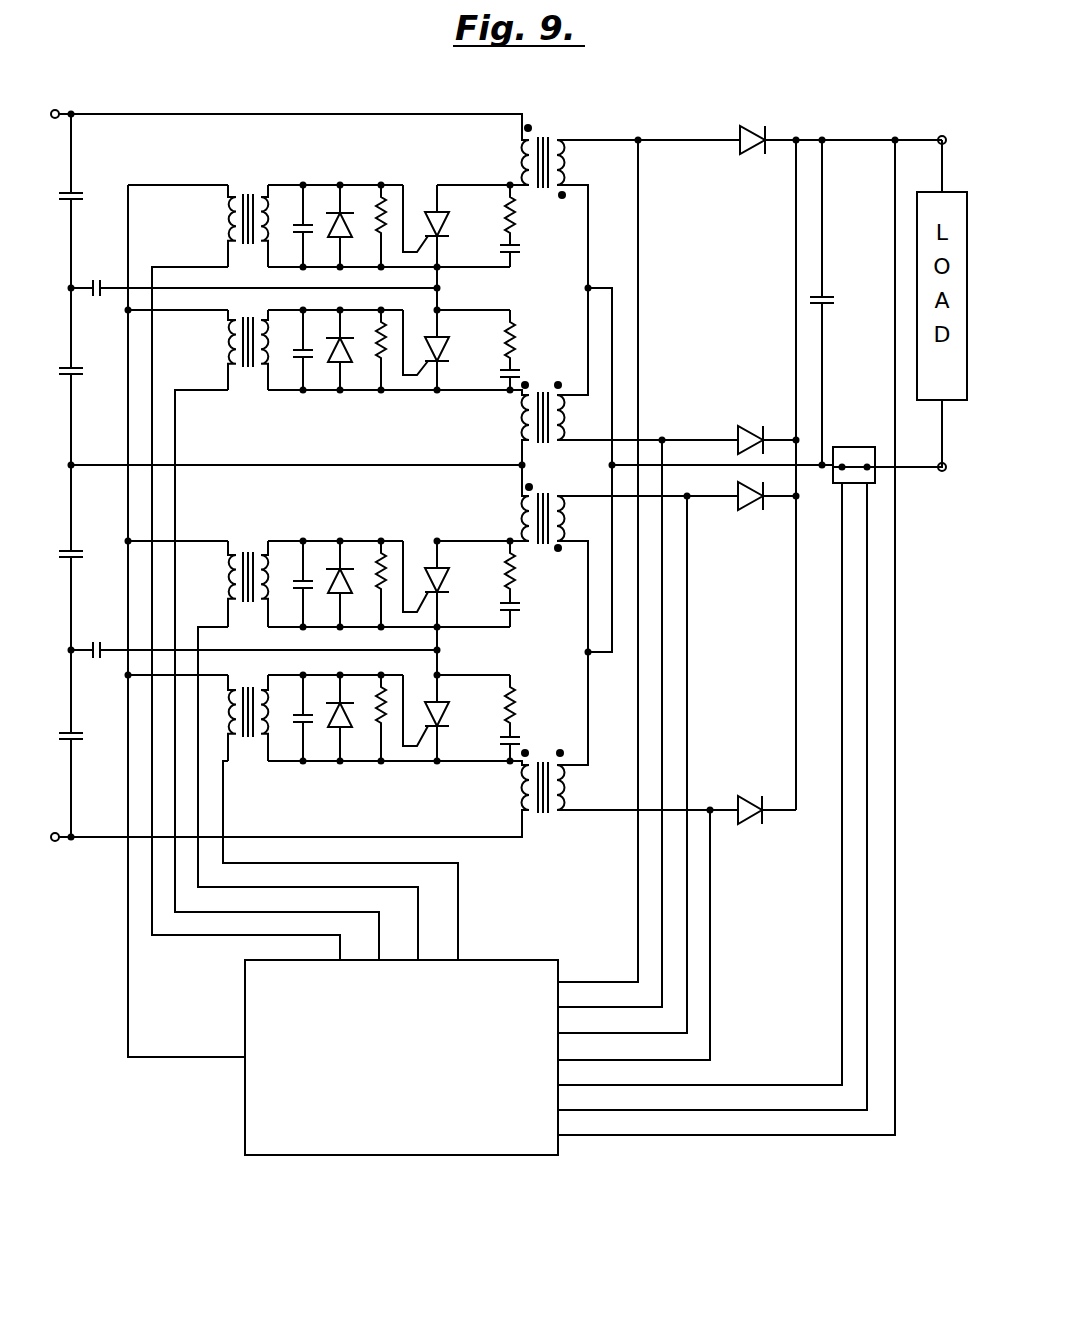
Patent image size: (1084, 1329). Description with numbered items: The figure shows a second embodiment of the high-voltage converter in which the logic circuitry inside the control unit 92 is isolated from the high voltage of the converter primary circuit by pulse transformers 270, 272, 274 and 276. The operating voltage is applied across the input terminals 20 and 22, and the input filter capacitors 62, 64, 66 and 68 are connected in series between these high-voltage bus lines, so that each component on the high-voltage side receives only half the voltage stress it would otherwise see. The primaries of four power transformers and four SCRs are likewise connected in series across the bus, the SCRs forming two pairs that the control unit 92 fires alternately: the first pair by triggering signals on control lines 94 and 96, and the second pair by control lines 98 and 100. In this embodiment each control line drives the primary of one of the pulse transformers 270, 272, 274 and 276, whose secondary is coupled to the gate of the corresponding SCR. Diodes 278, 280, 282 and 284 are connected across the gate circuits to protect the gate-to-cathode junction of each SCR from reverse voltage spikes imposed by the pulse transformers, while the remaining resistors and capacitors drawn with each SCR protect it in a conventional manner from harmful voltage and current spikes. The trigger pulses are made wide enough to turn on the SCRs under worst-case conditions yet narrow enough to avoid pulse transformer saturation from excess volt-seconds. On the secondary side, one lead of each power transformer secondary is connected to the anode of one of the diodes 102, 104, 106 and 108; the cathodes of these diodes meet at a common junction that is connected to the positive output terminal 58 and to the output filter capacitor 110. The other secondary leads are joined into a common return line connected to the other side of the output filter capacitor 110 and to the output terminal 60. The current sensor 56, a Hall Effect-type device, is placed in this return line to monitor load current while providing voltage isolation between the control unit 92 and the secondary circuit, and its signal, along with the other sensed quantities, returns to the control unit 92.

The input terminal 20 is at (58, 110).
The input terminal 22 is at (55, 842).
The input filter capacitor 62 is at (80, 197).
The input filter capacitor 64 is at (80, 373).
The input filter capacitor 66 is at (80, 556).
The input filter capacitor 68 is at (80, 739).
The pulse transformer 270 is at (251, 184).
The pulse transformer 272 is at (251, 379).
The pulse transformer 274 is at (251, 542).
The pulse transformer 276 is at (251, 749).
The diode 278 is at (355, 218).
The diode 280 is at (352, 363).
The diode 282 is at (350, 572).
The diode 284 is at (352, 747).
The diode 102 is at (748, 126).
The diode 104 is at (750, 430).
The diode 106 is at (750, 512).
The diode 108 is at (750, 800).
The output filter capacitor 110 is at (830, 306).
The current sensor 56 is at (853, 452).
The positive output terminal 58 is at (945, 136).
The output terminal 60 is at (944, 471).
The control unit 92 is at (525, 962).
The control line 94 is at (352, 947).
The control line 96 is at (382, 937).
The control line 98 is at (420, 938).
The control line 100 is at (460, 880).